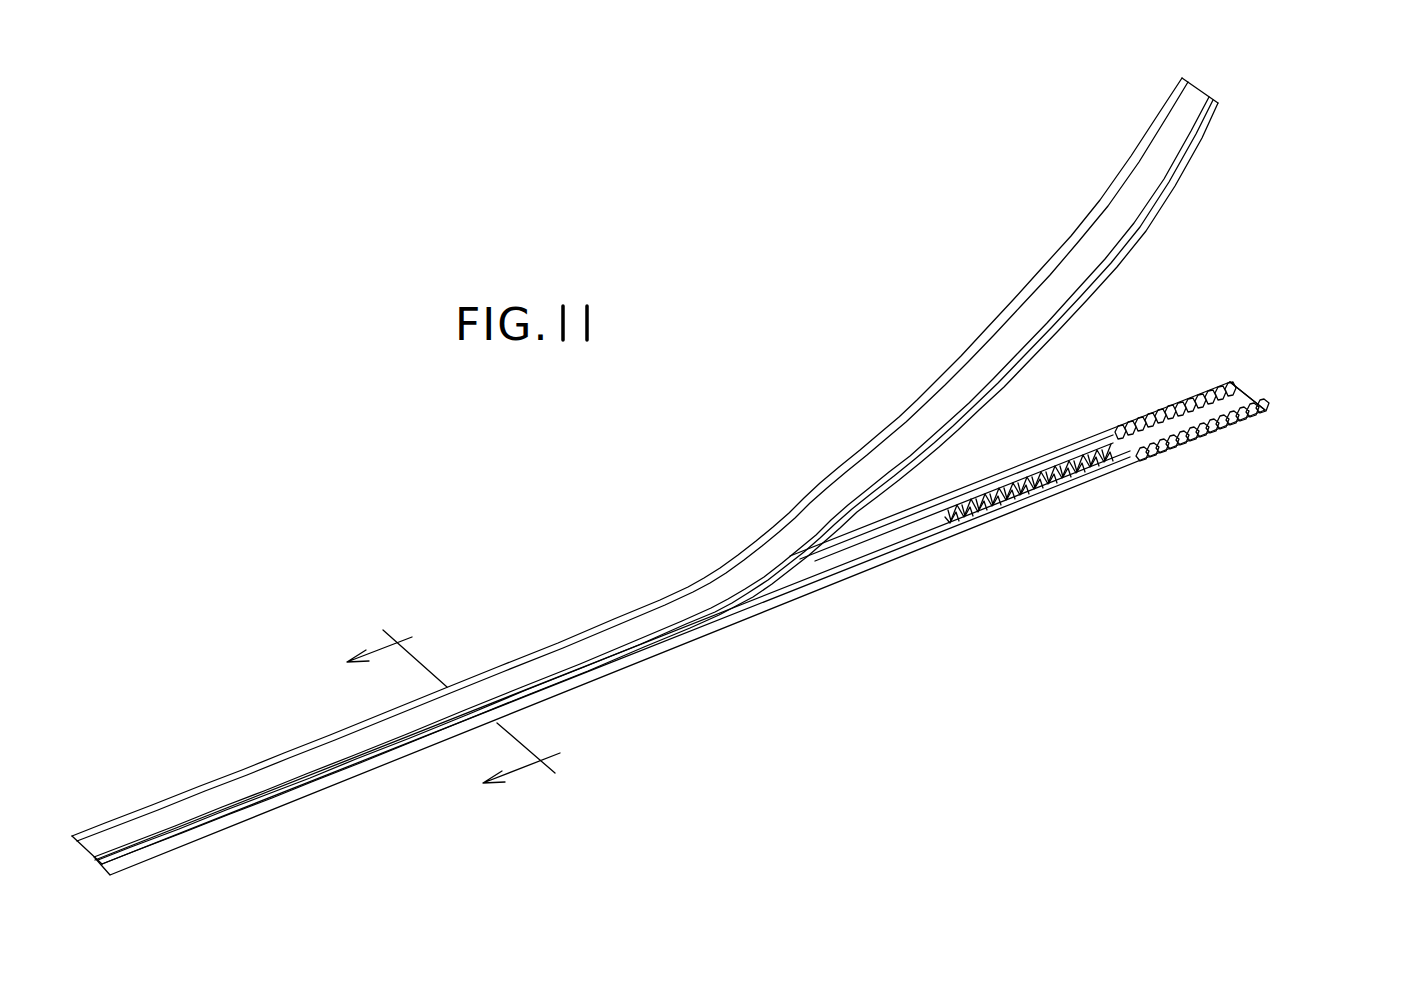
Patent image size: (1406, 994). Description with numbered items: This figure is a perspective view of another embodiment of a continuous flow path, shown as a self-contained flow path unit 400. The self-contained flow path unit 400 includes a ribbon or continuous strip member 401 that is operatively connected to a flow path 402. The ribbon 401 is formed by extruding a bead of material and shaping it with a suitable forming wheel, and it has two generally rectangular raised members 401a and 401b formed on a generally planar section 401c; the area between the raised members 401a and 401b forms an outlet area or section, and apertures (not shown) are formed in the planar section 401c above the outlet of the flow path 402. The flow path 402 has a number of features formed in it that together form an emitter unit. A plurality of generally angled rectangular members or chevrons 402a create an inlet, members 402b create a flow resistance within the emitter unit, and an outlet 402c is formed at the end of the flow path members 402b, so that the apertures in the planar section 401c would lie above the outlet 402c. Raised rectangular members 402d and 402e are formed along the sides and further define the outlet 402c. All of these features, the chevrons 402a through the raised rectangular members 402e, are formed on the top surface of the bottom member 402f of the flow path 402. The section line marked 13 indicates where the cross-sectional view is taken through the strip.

The self-contained flow path unit 400 is at (953, 645).
The ribbon or continuous strip member 401 is at (1016, 373).
The raised member 401a is at (1040, 272).
The raised member 401b is at (1102, 284).
The planar section 401c is at (908, 433).
The flow path 402 is at (921, 552).
The chevrons 402a is at (1192, 397).
The flow path members 402b is at (1013, 492).
The outlet 402c is at (925, 525).
The raised rectangular member 402d is at (872, 530).
The raised rectangular member 402e is at (948, 527).
The bottom member 402f is at (1250, 379).
The section line for FIG. 13 is at (571, 766).